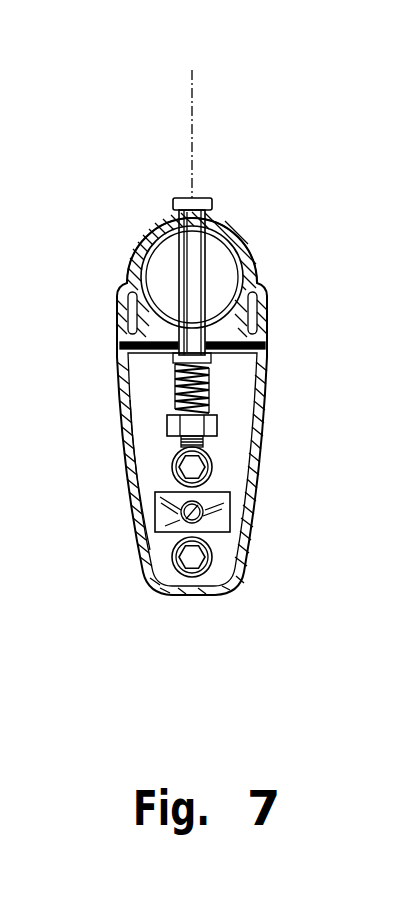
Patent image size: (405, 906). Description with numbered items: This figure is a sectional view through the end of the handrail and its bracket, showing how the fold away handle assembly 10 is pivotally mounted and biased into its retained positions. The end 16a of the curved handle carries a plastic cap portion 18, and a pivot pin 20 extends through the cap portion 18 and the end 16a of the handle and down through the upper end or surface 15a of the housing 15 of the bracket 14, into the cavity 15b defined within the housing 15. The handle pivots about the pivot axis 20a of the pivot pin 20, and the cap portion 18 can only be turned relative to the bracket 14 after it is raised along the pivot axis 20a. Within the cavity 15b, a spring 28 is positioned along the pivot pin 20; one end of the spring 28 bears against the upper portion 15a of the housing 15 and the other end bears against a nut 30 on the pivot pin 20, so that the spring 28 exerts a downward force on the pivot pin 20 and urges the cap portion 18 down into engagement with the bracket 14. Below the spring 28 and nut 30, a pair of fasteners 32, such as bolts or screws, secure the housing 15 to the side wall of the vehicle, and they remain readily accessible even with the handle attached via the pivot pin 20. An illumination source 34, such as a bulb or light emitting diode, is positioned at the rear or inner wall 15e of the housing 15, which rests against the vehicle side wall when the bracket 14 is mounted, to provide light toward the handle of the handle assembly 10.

The handle assembly 10 is at (102, 188).
The bracket 14 is at (299, 481).
The housing 15 is at (258, 556).
The upper end or surface of housing 15a is at (248, 337).
The cavity 15b is at (160, 472).
The rear or inner wall of housing 15e is at (145, 392).
The end of handle 16a is at (247, 238).
The cap portion 18 is at (256, 262).
The pivot pin 20 is at (204, 216).
The pivot axis 20a is at (192, 102).
The spring 28 is at (213, 383).
The nut 30 is at (164, 424).
The fasteners 32 is at (214, 466).
The illumination source 34 is at (205, 513).